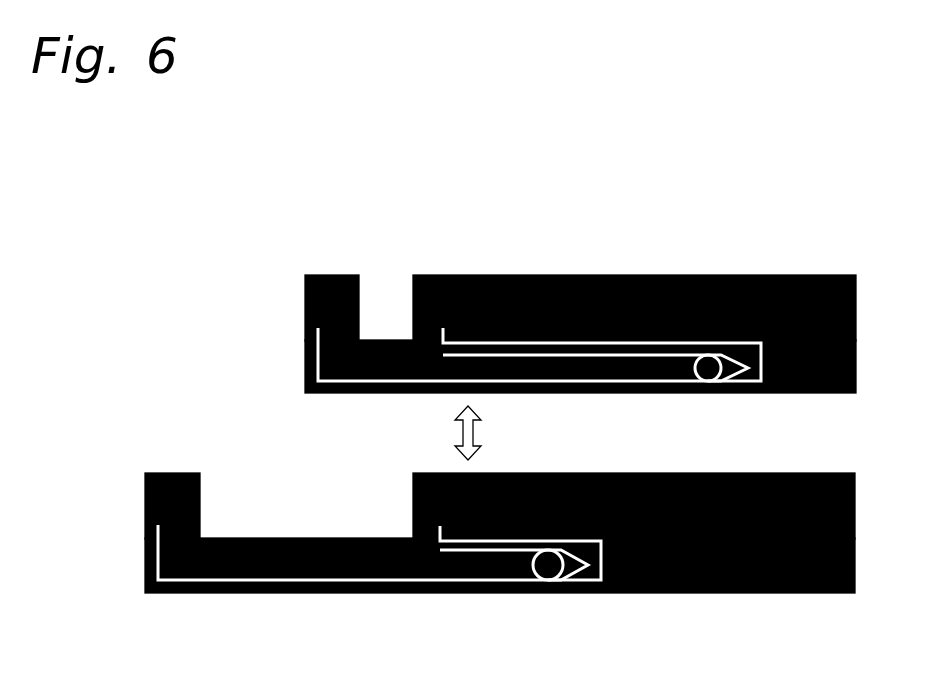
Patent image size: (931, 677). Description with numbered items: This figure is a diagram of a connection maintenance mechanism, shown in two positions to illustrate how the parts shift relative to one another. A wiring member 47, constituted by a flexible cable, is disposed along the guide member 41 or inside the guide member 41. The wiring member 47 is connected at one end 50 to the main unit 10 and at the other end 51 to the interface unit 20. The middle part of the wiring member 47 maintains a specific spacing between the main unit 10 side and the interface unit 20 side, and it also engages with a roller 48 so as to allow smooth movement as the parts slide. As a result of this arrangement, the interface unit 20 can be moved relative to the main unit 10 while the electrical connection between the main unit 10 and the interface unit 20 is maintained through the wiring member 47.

The main unit 10 is at (737, 295).
The interface unit 20 is at (340, 282).
The guide member 41 is at (302, 358).
The wiring member 47 is at (597, 373).
The roller 48 is at (703, 358).
The one end 50 is at (435, 320).
The other end 51 is at (310, 320).